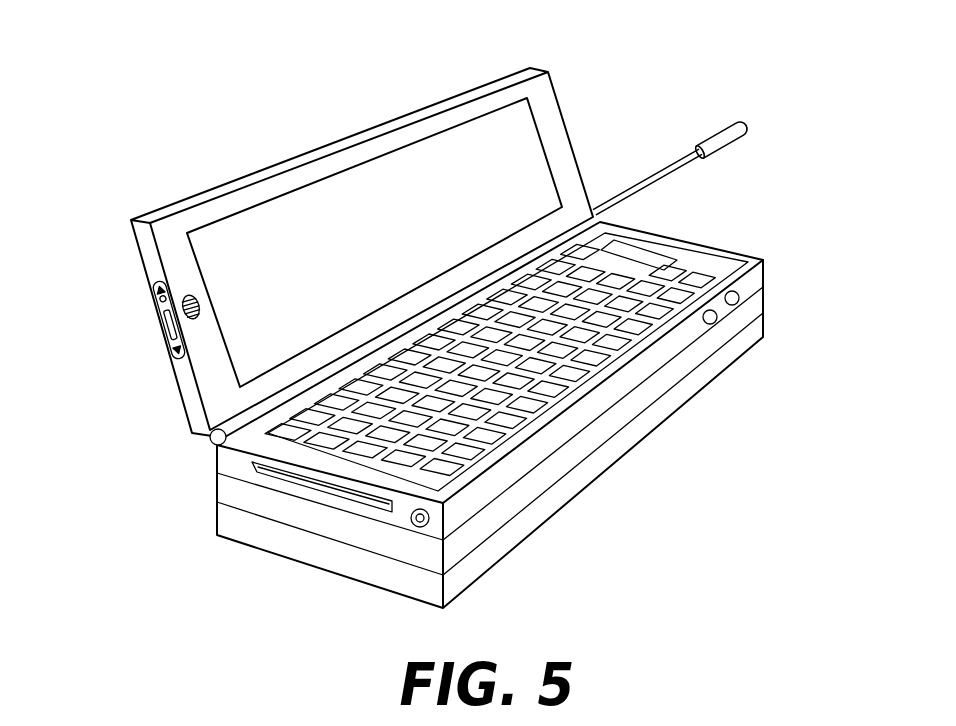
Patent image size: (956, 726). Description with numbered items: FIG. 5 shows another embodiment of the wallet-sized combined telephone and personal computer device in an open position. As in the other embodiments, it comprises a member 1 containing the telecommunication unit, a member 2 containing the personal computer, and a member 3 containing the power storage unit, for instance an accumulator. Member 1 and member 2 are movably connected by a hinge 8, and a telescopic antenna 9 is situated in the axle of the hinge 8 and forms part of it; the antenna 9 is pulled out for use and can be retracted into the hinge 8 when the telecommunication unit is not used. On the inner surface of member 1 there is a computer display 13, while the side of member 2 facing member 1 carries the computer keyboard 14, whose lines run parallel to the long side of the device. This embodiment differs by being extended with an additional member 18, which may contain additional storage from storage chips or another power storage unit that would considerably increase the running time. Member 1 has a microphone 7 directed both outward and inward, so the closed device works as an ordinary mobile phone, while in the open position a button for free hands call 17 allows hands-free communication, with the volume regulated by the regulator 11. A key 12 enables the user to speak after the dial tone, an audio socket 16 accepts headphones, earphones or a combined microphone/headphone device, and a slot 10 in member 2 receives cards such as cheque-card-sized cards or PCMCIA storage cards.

The member 1 is at (548, 80).
The member 2 is at (487, 473).
The member 3 is at (622, 442).
The microphone 7 is at (178, 358).
The hinge 8 is at (217, 447).
The telescopic antenna 9 is at (720, 126).
The card slot 10 is at (324, 490).
The regulator 11 is at (738, 301).
The key 12 is at (716, 319).
The computer display 13 is at (537, 183).
The computer keyboard 14 is at (703, 283).
The audio socket 16 is at (412, 528).
The button for free hands call 17 is at (158, 321).
The additional member 18 is at (550, 462).